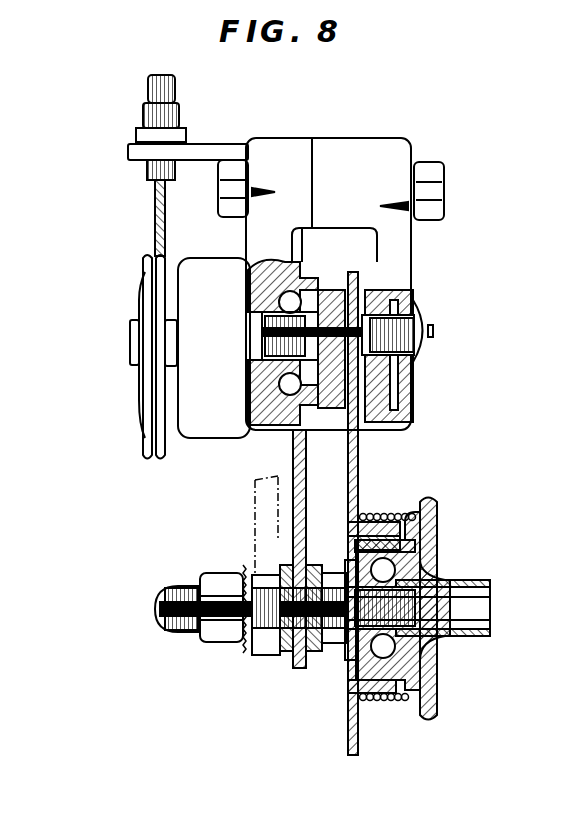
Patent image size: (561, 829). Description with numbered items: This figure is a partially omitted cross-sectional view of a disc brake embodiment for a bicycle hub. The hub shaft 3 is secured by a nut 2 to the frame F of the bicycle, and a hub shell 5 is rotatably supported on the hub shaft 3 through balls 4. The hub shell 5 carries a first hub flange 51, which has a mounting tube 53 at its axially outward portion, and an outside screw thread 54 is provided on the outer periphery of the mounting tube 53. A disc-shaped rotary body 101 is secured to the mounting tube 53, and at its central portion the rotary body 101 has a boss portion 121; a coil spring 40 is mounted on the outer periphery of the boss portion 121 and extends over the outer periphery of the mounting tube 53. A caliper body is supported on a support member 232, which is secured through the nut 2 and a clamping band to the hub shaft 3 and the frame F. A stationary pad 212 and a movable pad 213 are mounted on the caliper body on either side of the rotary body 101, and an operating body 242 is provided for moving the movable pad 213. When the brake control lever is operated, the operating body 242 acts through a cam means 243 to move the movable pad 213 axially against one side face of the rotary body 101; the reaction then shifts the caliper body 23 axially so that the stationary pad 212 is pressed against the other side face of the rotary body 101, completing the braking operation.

The housing 23 is at (290, 157).
The cam means 243 is at (330, 265).
The movable pad 213 is at (370, 291).
The stationary pad 212 is at (400, 308).
The operating body 242 is at (138, 397).
The rotary body 101 is at (360, 443).
The coil spring 40 is at (374, 525).
The boss portion 121 is at (393, 521).
The outside screw thread 54 is at (404, 534).
The first hub flange 51 is at (438, 503).
The balls 4 is at (392, 568).
The mounting tube 53 is at (398, 583).
The hub shell 5 is at (482, 579).
The hub shaft 3 is at (477, 606).
The support member 232 is at (300, 505).
The nut 2 is at (219, 630).
The frame F is at (267, 652).